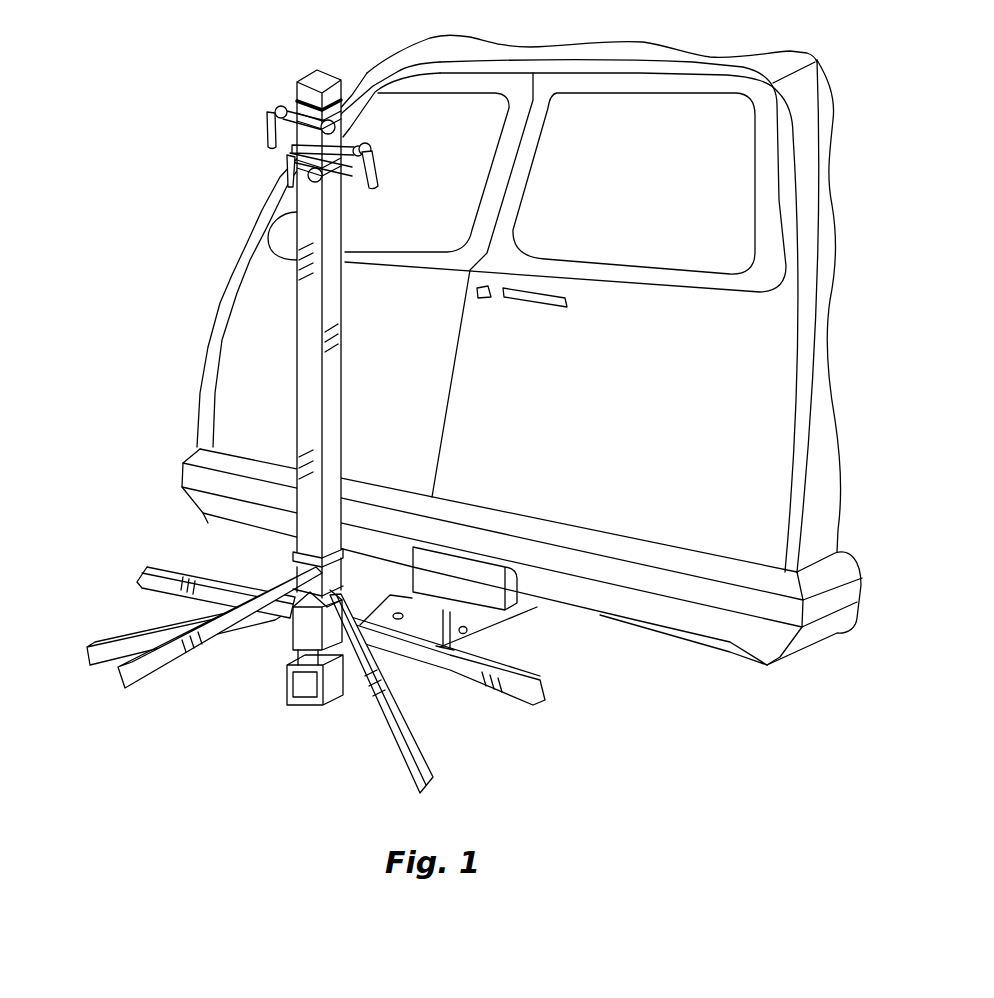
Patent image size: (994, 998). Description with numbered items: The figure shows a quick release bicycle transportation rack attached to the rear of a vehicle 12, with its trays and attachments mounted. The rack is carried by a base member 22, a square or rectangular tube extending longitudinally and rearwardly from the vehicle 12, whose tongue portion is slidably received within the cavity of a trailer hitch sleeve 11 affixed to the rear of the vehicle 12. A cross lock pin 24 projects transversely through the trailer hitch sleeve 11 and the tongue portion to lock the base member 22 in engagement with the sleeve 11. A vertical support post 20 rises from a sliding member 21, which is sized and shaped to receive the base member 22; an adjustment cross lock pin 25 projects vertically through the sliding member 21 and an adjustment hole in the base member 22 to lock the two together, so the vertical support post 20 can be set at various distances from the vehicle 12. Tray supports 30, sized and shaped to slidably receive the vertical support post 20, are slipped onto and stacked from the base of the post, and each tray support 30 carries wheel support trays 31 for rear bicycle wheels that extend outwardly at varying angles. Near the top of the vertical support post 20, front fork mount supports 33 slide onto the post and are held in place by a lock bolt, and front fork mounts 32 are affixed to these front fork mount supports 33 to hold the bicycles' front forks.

The trailer hitch sleeve 11 is at (445, 650).
The vehicle 12 is at (702, 396).
The vertical support post 20 is at (305, 332).
The sliding member 21 is at (337, 690).
The base member 22 is at (457, 640).
The cross lock pin 24 is at (468, 632).
The adjustment cross lock pin 25 is at (400, 621).
The tray support 30 is at (300, 555).
The wheel support tray 31 is at (145, 572).
The front fork mount 32 is at (278, 107).
The front fork mount support 33 is at (290, 128).